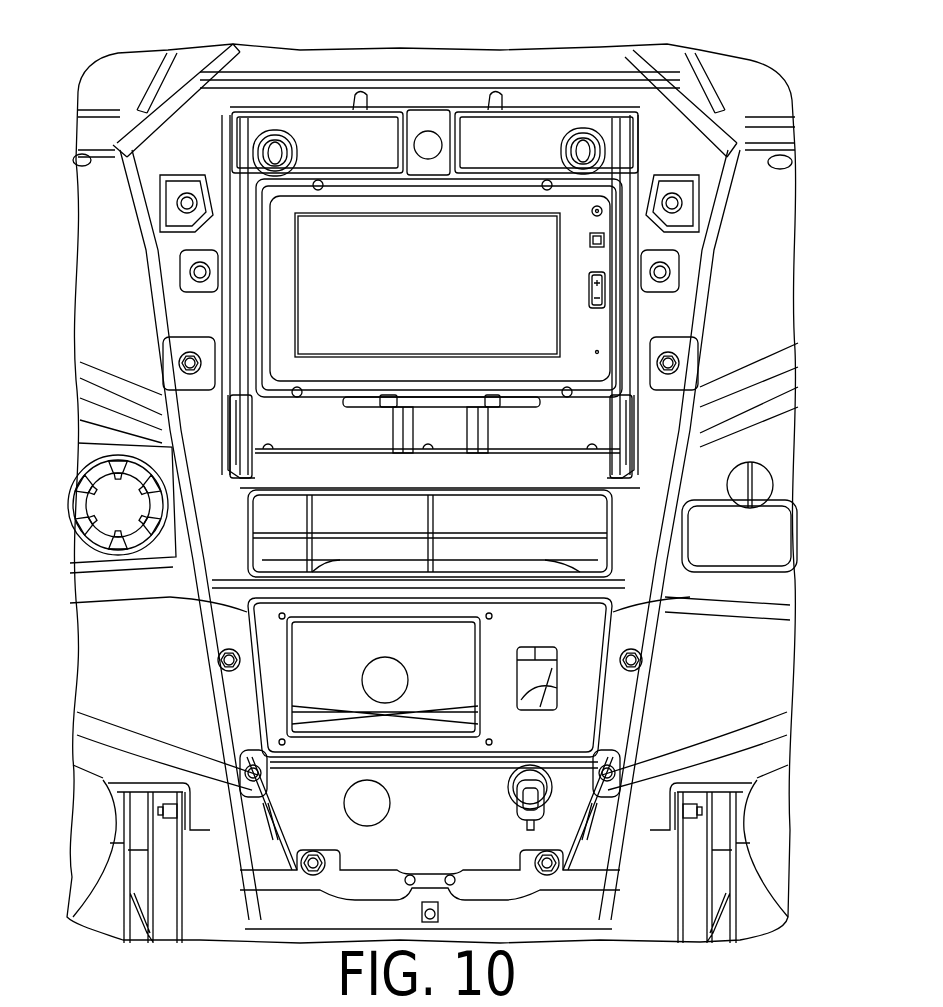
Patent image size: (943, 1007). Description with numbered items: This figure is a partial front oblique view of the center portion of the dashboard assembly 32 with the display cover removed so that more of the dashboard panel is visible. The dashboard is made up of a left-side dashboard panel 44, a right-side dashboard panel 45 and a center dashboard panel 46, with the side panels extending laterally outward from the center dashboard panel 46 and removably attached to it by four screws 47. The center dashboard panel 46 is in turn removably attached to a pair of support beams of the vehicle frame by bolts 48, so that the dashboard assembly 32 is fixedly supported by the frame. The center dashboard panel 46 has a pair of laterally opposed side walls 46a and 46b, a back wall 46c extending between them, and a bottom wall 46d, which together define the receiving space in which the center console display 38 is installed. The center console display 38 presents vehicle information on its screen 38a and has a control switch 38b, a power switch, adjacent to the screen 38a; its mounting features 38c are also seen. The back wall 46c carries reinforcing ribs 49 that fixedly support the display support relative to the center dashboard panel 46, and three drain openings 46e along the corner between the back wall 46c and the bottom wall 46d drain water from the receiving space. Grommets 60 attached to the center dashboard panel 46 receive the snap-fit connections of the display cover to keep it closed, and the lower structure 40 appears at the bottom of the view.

The dashboard assembly 32 is at (497, 40).
The center console display 38 is at (388, 180).
The screen 38a is at (327, 333).
The control switch 38b is at (586, 240).
The display bracket 38c is at (337, 180).
The lower bumper bracket 40 is at (538, 947).
The left-side dashboard panel 44 is at (118, 317).
The right-side dashboard panel 45 is at (770, 283).
The center dashboard panel 46 is at (162, 240).
The side wall 46a is at (233, 450).
The side wall 46b is at (623, 453).
The back wall 46c is at (513, 147).
The bottom wall 46d is at (570, 468).
The drain openings 46e is at (428, 447).
The screws 47 is at (190, 363).
The bolts 48 is at (183, 200).
The reinforcing ribs 49 is at (403, 453).
The grommets 60 is at (273, 130).